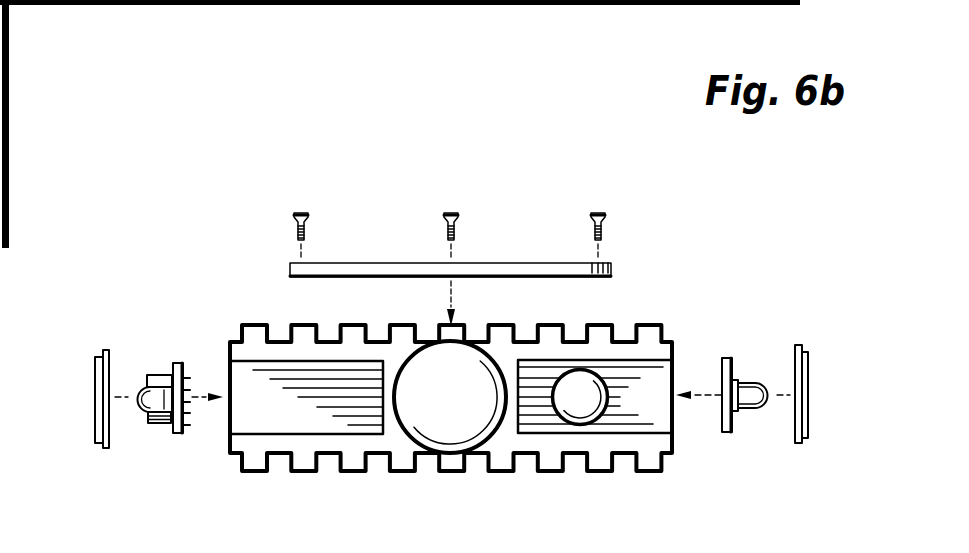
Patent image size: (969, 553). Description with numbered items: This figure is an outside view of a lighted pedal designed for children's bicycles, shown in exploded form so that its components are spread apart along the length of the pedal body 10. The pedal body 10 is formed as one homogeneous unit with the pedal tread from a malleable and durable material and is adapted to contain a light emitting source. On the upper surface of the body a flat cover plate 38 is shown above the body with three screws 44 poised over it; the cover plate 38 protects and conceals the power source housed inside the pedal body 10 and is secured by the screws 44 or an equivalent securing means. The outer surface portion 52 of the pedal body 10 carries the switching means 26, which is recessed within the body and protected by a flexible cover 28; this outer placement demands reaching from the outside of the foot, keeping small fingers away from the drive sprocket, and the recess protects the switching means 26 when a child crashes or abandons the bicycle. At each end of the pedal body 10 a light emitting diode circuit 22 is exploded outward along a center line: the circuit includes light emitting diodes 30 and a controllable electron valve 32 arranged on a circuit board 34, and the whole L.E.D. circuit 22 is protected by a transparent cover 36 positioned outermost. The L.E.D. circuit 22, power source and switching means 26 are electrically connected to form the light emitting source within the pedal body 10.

The pedal body 10 is at (267, 413).
The outer surface portion 52 is at (333, 402).
The switching means 26 is at (595, 396).
The flexible cover 28 is at (583, 402).
The cover plate 38 is at (318, 276).
The screws 44 is at (603, 213).
The light emitting diode circuit 22 is at (452, 404).
The circuit board 34 is at (183, 431).
The light emitting diodes 30 is at (137, 400).
The controllable electron valve 32 is at (147, 425).
The transparent cover 36 is at (95, 367).